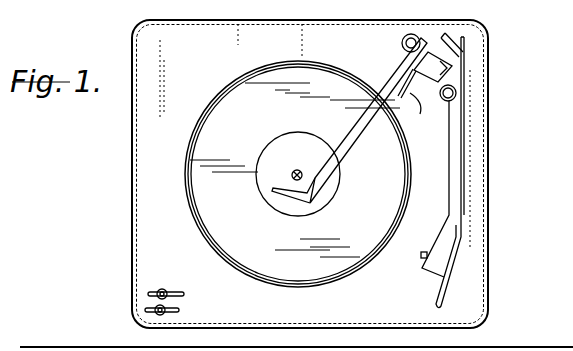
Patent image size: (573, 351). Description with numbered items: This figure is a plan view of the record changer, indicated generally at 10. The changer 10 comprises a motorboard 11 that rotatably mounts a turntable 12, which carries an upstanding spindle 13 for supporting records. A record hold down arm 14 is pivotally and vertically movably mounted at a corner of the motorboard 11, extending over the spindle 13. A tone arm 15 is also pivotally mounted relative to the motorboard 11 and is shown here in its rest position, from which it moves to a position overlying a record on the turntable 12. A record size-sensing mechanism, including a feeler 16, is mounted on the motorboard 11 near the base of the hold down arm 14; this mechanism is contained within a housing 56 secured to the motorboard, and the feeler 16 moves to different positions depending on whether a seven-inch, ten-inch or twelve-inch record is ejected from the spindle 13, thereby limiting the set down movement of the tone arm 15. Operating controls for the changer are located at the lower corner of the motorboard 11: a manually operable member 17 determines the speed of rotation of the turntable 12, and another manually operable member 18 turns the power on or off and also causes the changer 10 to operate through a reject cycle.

The changer 10 is at (490, 206).
The motorboard 11 is at (476, 108).
The turntable 12 is at (337, 269).
The spindle 13 is at (298, 170).
The record hold down arm 14 is at (386, 84).
The tone arm 15 is at (455, 152).
The feeler 16 is at (422, 113).
The manually operable member 17 is at (163, 289).
The manually operable member 18 is at (160, 316).
The housing 56 is at (447, 68).